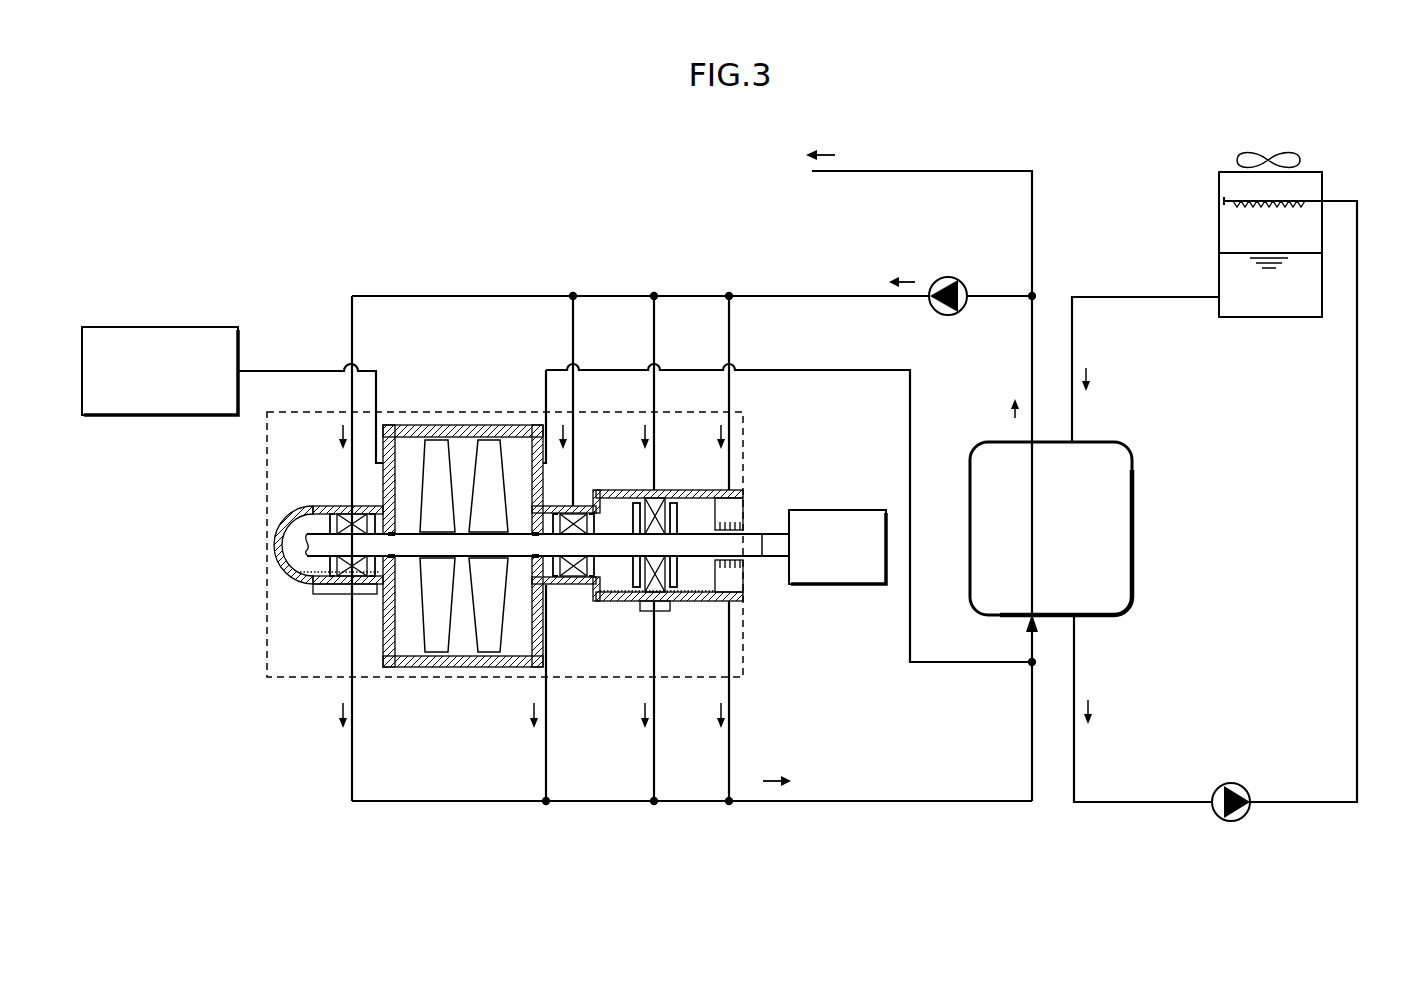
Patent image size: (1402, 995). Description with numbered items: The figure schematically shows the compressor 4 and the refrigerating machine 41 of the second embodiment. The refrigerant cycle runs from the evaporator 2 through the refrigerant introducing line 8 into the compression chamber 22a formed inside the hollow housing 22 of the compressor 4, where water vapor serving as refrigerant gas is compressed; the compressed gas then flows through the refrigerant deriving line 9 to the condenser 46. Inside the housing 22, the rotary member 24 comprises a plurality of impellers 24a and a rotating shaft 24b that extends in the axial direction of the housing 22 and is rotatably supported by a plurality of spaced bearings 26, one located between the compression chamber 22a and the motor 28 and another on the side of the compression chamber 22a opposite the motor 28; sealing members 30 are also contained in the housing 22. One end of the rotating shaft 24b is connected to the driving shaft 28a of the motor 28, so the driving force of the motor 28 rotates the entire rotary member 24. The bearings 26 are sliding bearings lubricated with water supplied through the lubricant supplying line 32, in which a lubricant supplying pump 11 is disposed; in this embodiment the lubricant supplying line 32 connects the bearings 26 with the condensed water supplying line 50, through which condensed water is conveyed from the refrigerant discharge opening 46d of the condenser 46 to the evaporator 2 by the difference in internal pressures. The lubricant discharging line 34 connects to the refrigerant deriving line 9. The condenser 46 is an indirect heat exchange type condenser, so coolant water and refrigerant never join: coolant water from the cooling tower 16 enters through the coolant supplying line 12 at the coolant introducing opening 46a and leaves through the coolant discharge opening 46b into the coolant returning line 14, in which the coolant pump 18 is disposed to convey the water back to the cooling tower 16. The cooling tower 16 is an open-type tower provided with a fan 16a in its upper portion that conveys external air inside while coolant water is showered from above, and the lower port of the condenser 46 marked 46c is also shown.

The evaporator 2 is at (186, 326).
The compressor 4 is at (607, 638).
The refrigerant introducing line 8 is at (281, 369).
The refrigerant deriving line 9 is at (848, 368).
The lubricant supplying pump 11 is at (961, 283).
The coolant supplying line 12 is at (1073, 338).
The coolant returning line 14 is at (1358, 512).
The cooling tower 16 is at (1219, 220).
The fan 16a is at (1284, 150).
The coolant pump 18 is at (1240, 786).
The housing 22 is at (600, 489).
The compression chamber 22a is at (463, 452).
The rotary member 24 is at (456, 605).
The impellers 24a is at (478, 607).
The rotating shaft 24b is at (518, 556).
The bearings 26 is at (342, 585).
The motor 28 is at (822, 509).
The driving shaft 28a is at (773, 533).
The sealing members 30 is at (395, 530).
The lubricant supplying line 32 is at (771, 293).
The lubricant discharging line 34 is at (780, 803).
The refrigerating machine 41 is at (398, 141).
The condenser 46 is at (1133, 500).
The coolant introducing opening 46a is at (1074, 440).
The coolant discharge opening 46b is at (1075, 617).
The condenser refrigerant inlet 46c is at (1020, 617).
The refrigerant discharge opening 46d is at (1030, 440).
The condensed water supplying line 50 is at (1033, 216).